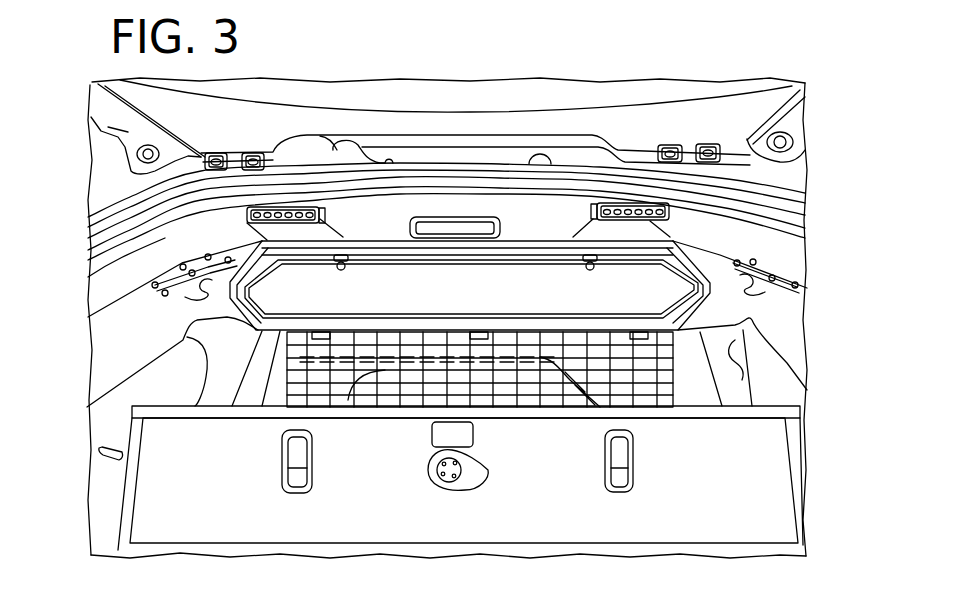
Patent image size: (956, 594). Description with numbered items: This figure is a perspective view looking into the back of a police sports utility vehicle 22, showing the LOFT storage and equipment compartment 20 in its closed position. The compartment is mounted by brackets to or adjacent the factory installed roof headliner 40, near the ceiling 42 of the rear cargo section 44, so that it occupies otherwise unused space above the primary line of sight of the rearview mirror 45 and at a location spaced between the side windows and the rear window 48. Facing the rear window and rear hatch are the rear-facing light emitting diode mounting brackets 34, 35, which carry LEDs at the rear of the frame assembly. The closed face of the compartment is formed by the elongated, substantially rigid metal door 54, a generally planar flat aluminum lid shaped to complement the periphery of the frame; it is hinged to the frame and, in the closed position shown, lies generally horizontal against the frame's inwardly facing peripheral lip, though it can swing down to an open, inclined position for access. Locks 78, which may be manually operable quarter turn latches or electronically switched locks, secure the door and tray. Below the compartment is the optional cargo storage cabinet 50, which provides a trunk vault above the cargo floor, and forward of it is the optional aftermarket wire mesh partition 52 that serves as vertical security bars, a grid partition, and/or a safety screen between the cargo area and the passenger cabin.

The storage and equipment compartment 20 is at (527, 245).
The police sports utility vehicle 22 is at (88, 493).
The rear-facing light emitting diode mounting bracket 34 is at (283, 207).
The rear-facing light emitting diode mounting bracket 35 is at (620, 204).
The factory installed roof headliner 40 is at (717, 262).
The ceiling 42 is at (134, 222).
The rear cargo section 44 is at (80, 402).
The rearview mirror 45 is at (505, 378).
The rear window 48 is at (486, 80).
The cargo storage cabinet 50 is at (752, 517).
The wire mesh partition 52 is at (650, 360).
The door 54 is at (487, 294).
The locks 78 is at (350, 268).